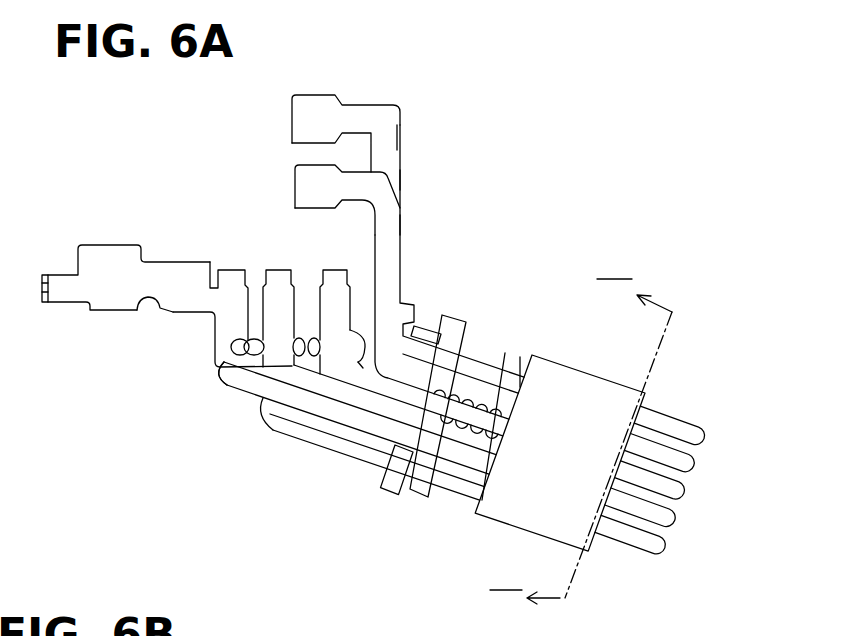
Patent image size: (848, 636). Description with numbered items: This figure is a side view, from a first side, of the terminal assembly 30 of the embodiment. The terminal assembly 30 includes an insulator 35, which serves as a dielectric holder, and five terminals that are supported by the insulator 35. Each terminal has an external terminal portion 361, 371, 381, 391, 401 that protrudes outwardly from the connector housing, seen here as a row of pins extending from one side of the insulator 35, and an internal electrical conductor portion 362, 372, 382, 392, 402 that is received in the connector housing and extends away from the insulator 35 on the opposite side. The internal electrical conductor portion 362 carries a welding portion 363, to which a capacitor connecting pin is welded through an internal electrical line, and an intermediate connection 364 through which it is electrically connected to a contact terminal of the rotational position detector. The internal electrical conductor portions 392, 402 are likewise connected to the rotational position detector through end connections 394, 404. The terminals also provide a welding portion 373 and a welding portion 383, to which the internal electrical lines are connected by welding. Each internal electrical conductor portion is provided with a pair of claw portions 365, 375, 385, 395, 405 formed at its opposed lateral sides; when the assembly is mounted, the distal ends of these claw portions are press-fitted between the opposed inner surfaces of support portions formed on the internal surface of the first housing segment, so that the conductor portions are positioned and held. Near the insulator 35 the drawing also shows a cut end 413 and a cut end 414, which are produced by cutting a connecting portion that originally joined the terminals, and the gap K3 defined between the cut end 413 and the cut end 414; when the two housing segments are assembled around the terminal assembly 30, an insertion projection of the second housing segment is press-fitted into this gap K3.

The terminal assembly 30 is at (547, 187).
The insulator 35 is at (533, 520).
The gap K3 is at (470, 400).
The external terminal portion 361 is at (675, 522).
The internal electrical conductor portion 362 is at (278, 388).
The welding portion 363 is at (112, 298).
The intermediate connection 364 is at (233, 268).
The claw portions 365 is at (173, 262).
The external terminal portion 371 is at (700, 470).
The internal electrical conductor portion 372 is at (520, 357).
The welding portion 373 is at (300, 178).
The claw portions 375 is at (416, 210).
The external terminal portion 381 is at (678, 433).
The internal electrical conductor portion 382 is at (401, 180).
The welding portion 383 is at (298, 118).
The claw portions 385 is at (402, 145).
The external terminal portion 391 is at (642, 543).
The internal electrical conductor portion 392 is at (293, 422).
The end connection 394 is at (277, 268).
The claw portions 395 is at (238, 350).
The external terminal portion 401 is at (682, 495).
The internal electrical conductor portion 402 is at (370, 293).
The end connection 404 is at (337, 268).
The claw portions 405 is at (307, 343).
The cut end 413 is at (500, 443).
The cut end 414 is at (464, 395).